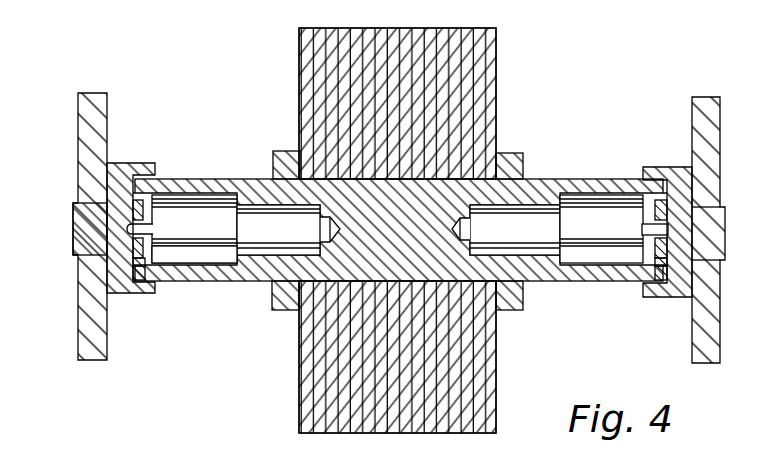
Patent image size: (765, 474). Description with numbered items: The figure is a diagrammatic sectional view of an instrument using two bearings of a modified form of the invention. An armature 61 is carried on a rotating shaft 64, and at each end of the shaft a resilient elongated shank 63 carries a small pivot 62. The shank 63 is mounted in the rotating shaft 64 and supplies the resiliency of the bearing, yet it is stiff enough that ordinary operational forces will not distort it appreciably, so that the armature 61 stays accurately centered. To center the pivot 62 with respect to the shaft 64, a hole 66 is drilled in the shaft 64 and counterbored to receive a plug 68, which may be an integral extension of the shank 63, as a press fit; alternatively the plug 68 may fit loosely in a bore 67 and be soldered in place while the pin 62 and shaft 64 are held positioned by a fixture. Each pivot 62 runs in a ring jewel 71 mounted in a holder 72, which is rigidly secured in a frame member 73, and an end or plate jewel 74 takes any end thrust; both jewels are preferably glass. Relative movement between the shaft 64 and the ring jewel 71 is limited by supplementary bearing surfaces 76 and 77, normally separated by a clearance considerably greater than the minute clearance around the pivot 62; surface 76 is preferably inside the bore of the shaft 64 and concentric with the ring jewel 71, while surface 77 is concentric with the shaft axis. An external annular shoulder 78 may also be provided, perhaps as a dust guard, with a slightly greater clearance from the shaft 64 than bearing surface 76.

The armature 61 is at (300, 40).
The pivot 62 is at (149, 222).
The elongated shank 63 is at (195, 223).
The shaft 64 is at (533, 197).
The hole 66 is at (338, 205).
The bore 67 is at (258, 268).
The plug 68 is at (283, 205).
The ring jewel 71 is at (148, 218).
The holder 72 is at (76, 205).
The frame member 73 is at (92, 137).
The end or plate jewel 74 is at (125, 222).
The supplementary bearing surface 76 is at (145, 263).
The supplementary bearing surface 77 is at (150, 286).
The external annular shoulder 78 is at (673, 294).